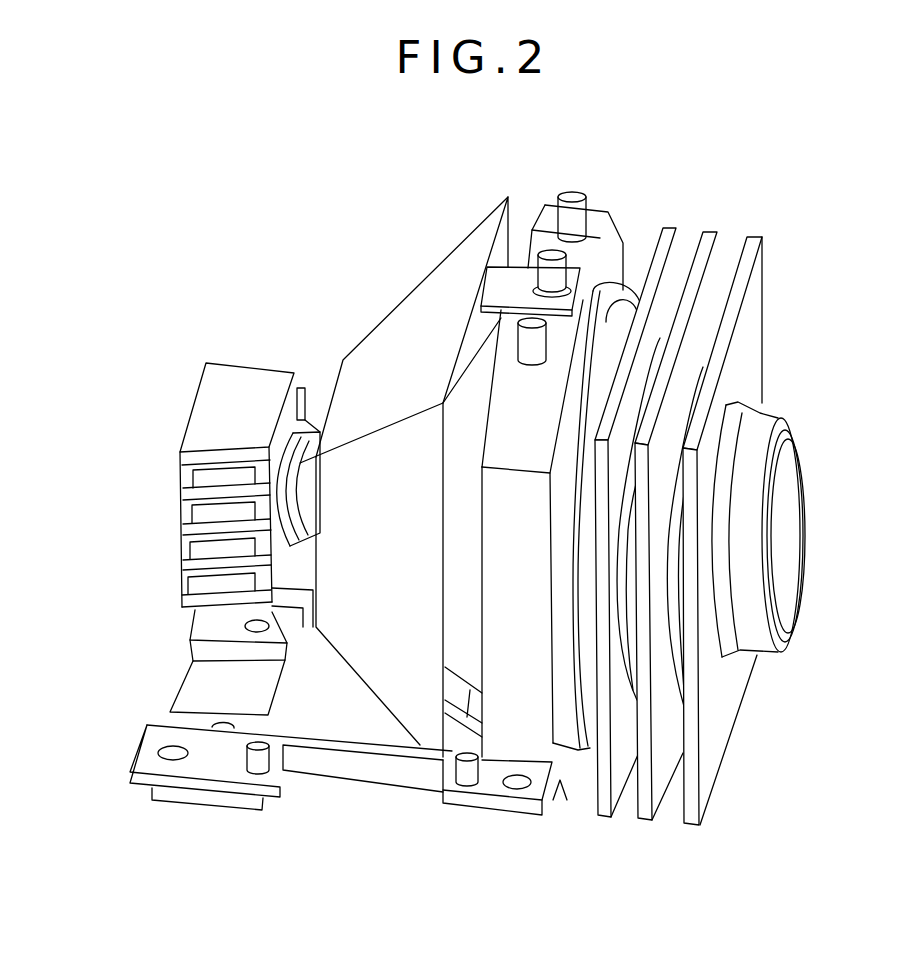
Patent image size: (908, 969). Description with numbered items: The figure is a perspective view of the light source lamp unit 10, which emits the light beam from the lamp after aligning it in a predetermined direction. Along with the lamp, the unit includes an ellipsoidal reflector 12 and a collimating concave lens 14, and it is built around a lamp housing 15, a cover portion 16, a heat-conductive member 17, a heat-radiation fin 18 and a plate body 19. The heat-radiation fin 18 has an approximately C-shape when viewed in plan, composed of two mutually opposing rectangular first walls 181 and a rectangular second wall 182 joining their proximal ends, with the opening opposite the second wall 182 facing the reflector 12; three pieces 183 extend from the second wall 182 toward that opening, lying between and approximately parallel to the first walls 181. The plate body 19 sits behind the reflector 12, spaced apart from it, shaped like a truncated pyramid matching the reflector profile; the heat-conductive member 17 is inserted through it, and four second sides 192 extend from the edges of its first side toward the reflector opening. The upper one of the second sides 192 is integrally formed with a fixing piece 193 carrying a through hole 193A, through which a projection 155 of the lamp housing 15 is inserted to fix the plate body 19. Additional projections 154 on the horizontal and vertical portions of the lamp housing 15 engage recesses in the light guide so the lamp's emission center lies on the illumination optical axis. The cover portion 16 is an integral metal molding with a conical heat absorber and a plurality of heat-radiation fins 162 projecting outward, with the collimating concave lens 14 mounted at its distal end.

The light source lamp unit 10 is at (812, 190).
The ellipsoidal reflector 12 is at (460, 627).
The collimating concave lens 14 is at (792, 500).
The lamp housing 15 is at (362, 790).
The cover portion 16 is at (757, 330).
The heat-conductive member 17 is at (311, 426).
The heat-radiation fin 18 is at (244, 372).
The plate body 19 is at (443, 280).
The projections 154 is at (576, 194).
The projection 155 is at (552, 251).
The heat-radiation fins 162 is at (668, 226).
The first walls 181 is at (200, 413).
The second wall 182 is at (297, 618).
The pieces 183 is at (183, 494).
The second sides 192 is at (395, 330).
The fixing piece 193 is at (488, 292).
The through hole 193A is at (548, 381).